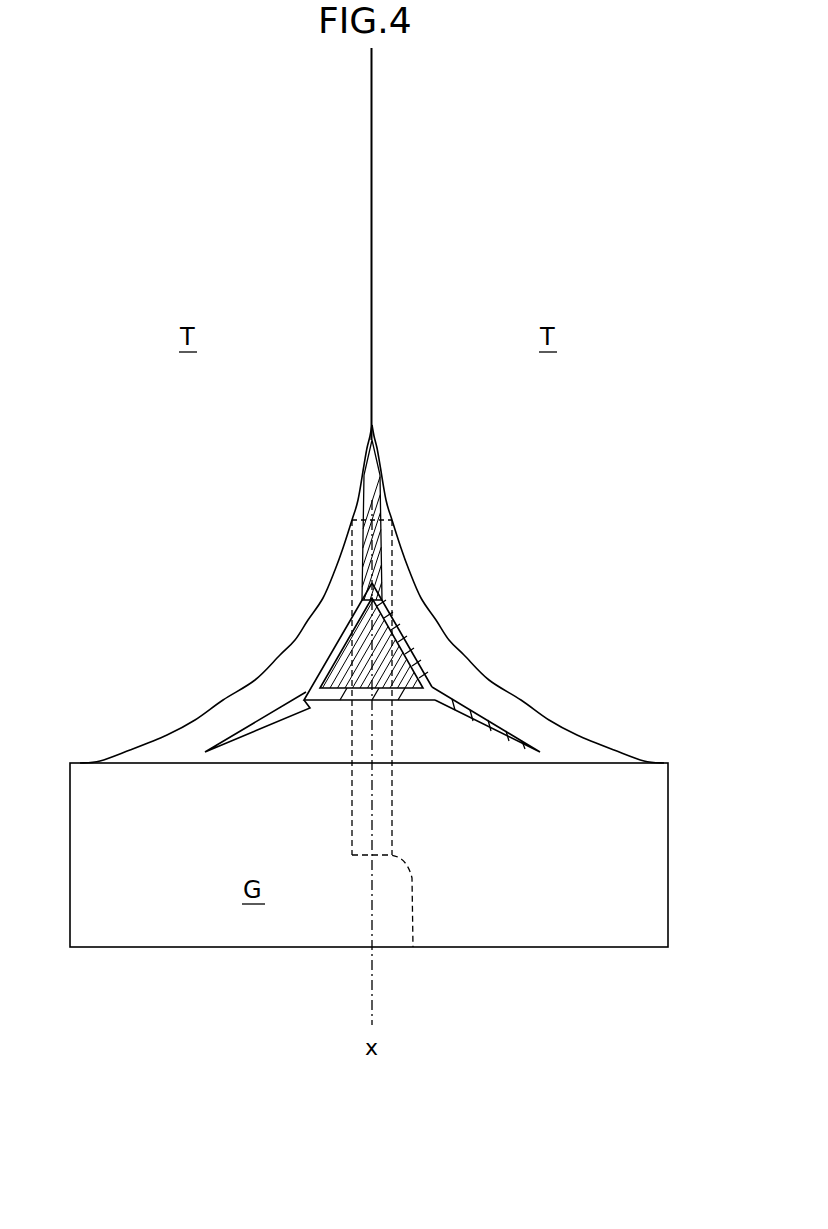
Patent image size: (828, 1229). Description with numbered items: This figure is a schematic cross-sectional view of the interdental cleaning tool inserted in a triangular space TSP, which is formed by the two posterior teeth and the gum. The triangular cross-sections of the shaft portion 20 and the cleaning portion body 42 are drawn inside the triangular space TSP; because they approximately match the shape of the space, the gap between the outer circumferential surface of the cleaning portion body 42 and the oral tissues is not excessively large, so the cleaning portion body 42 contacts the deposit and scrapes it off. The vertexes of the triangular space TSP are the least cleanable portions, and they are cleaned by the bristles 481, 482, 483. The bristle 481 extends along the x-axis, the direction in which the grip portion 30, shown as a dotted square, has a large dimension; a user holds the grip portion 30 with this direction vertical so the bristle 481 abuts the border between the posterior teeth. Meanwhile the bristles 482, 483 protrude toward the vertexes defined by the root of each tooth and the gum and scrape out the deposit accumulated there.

The shaft portion 20 is at (423, 673).
The grip portion 30 is at (413, 947).
The cleaning portion body 42 is at (398, 633).
The bristle 481 is at (374, 550).
The bristle 482 is at (262, 712).
The bristle 483 is at (468, 718).
The triangular space TSP is at (441, 742).